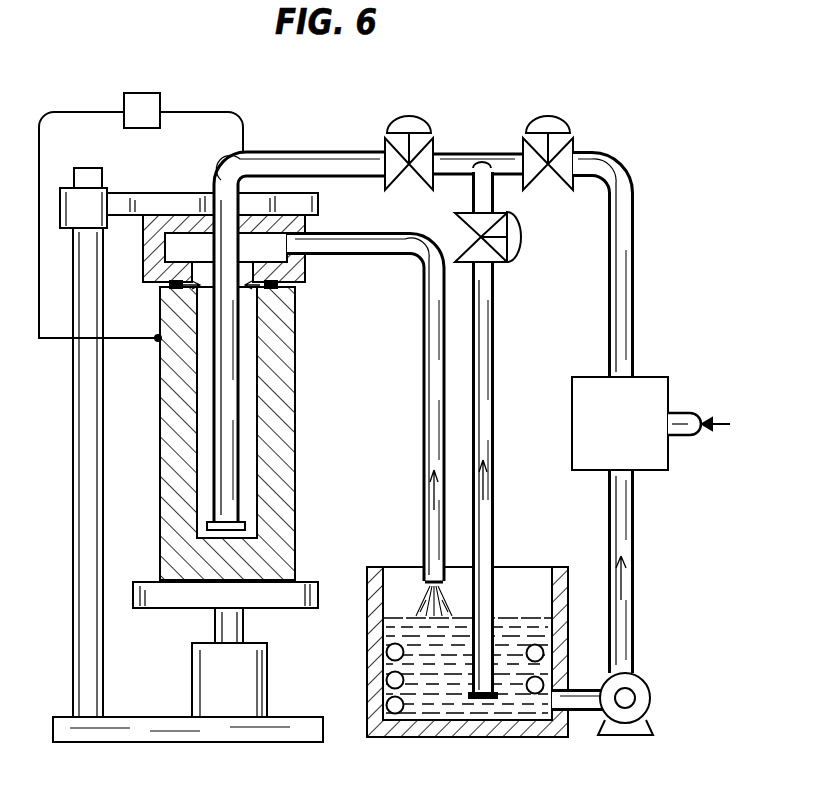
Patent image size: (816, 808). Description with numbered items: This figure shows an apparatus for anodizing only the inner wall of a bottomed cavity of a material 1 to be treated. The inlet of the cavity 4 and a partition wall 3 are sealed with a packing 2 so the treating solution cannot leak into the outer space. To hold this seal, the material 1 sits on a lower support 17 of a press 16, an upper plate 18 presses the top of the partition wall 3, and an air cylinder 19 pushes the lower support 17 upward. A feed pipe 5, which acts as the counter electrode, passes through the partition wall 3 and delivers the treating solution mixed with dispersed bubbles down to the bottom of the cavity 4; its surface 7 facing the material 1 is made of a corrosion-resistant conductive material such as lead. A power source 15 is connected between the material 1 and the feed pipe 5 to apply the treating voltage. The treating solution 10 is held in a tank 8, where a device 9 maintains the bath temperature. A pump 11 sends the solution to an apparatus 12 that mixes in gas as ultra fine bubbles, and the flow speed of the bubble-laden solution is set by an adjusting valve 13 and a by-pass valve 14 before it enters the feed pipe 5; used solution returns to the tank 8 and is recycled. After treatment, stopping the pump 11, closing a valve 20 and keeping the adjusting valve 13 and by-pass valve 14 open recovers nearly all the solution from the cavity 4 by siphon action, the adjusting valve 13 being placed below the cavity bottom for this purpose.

The material to be treated 1 is at (280, 393).
The packing 2 is at (300, 285).
The partition wall 3 is at (305, 262).
The cavity 4 is at (247, 448).
The feed pipe 5 is at (230, 503).
The surface of the feed pipe 7 is at (258, 352).
The tank 8 is at (517, 735).
The device for maintaining the bath temperature 9 is at (537, 694).
The treating solution 10 is at (440, 695).
The pump 11 is at (637, 690).
The apparatus for forming fine bubbles 12 is at (651, 423).
The adjusting valve 13 is at (420, 121).
The by-pass valve 14 is at (523, 237).
The power source 15 is at (155, 105).
The press 16 is at (82, 443).
The lower support 17 is at (280, 598).
The upper plate 18 is at (175, 200).
The air cylinder 19 is at (250, 675).
The valve 20 is at (548, 118).